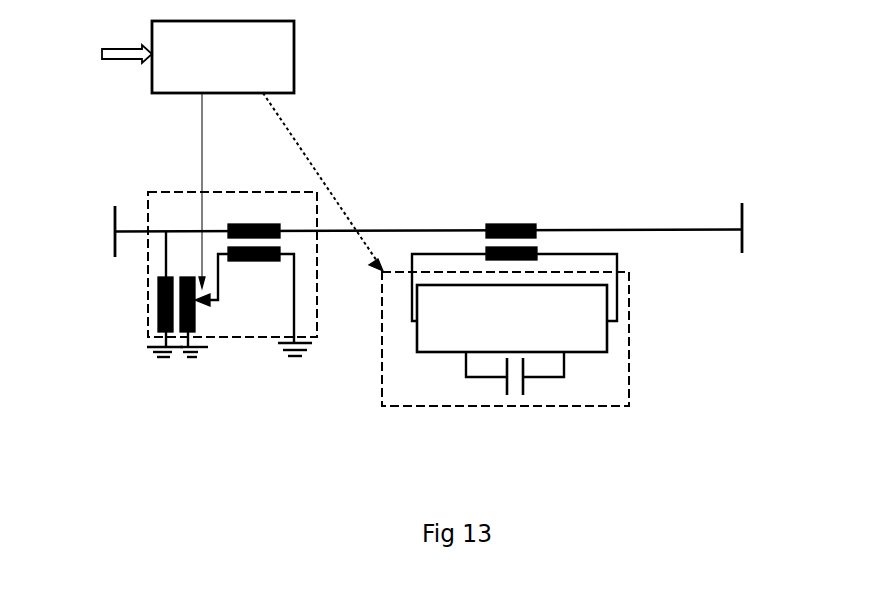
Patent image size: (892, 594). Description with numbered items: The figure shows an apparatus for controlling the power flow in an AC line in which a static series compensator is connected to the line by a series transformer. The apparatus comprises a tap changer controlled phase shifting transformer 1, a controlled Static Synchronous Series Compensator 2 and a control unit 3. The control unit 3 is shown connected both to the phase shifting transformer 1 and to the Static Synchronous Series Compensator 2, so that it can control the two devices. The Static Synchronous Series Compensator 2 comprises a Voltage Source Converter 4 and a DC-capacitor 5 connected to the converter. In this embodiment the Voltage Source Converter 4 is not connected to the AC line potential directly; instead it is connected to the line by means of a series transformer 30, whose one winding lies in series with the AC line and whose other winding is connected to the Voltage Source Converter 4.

The tap changer controlled phase shifting transformer 1 is at (227, 192).
The static synchronous series compensator 2 is at (629, 350).
The control unit 3 is at (294, 43).
The voltage source converter 4 is at (607, 335).
The DC-capacitor 5 is at (505, 387).
The series transformer 30 is at (519, 222).